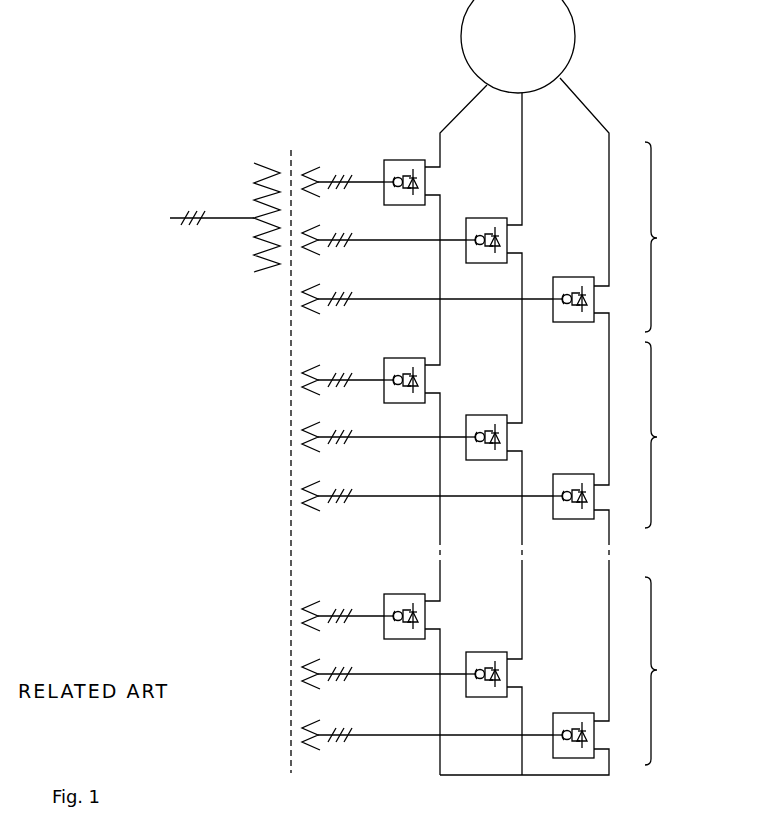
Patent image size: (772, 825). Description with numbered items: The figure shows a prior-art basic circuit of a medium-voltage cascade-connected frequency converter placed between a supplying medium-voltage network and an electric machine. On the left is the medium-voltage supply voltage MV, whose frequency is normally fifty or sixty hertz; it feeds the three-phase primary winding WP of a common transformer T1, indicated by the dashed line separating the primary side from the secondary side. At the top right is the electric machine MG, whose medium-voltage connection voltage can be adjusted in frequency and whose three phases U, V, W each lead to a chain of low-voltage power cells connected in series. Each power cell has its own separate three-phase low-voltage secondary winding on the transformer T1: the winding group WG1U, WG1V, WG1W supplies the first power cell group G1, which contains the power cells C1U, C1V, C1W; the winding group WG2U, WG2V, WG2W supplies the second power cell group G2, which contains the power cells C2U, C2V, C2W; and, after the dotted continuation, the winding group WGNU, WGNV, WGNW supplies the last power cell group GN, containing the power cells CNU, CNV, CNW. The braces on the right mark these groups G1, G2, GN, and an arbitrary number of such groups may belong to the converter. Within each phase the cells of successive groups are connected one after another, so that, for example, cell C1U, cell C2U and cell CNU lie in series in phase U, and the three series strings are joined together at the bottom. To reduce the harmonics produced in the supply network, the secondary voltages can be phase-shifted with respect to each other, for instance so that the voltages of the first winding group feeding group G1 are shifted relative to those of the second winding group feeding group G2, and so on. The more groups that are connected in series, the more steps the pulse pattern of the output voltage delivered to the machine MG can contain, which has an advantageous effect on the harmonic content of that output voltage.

The electric machine MG is at (518, 46).
The phase U is at (456, 429).
The phase V is at (522, 434).
The phase W is at (524, 426).
The medium-voltage supply voltage MV is at (174, 223).
The primary winding WP is at (262, 205).
The transformer T1 is at (285, 445).
The secondary winding WG1U is at (343, 176).
The secondary winding WG1V is at (384, 234).
The secondary winding WG1W is at (427, 293).
The secondary winding WG2U is at (343, 374).
The secondary winding WG2V is at (384, 431).
The secondary winding WG2W is at (427, 490).
The secondary winding WGNU is at (343, 610).
The secondary winding WGNV is at (384, 668).
The secondary winding WGNW is at (427, 729).
The power cell C1U is at (404, 174).
The power cell C1V is at (486, 232).
The power cell C1W is at (573, 291).
The power cell C2U is at (404, 372).
The power cell C2V is at (486, 429).
The power cell C2W is at (573, 488).
The power cell CNU is at (404, 608).
The power cell CNV is at (486, 666).
The power cell CNW is at (573, 727).
The first power cell group G1 is at (669, 237).
The second power cell group G2 is at (669, 435).
The N-th power cell group GN is at (670, 671).